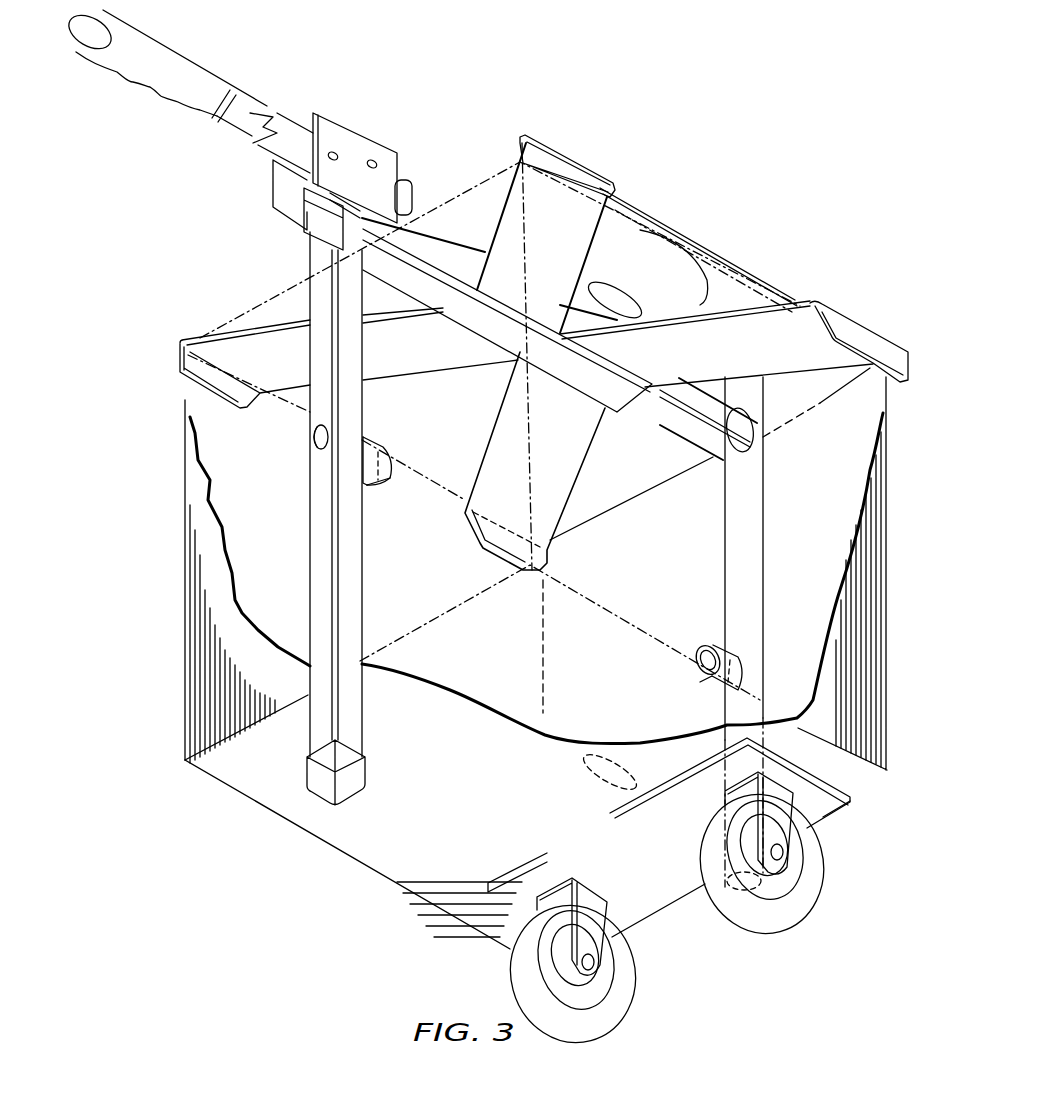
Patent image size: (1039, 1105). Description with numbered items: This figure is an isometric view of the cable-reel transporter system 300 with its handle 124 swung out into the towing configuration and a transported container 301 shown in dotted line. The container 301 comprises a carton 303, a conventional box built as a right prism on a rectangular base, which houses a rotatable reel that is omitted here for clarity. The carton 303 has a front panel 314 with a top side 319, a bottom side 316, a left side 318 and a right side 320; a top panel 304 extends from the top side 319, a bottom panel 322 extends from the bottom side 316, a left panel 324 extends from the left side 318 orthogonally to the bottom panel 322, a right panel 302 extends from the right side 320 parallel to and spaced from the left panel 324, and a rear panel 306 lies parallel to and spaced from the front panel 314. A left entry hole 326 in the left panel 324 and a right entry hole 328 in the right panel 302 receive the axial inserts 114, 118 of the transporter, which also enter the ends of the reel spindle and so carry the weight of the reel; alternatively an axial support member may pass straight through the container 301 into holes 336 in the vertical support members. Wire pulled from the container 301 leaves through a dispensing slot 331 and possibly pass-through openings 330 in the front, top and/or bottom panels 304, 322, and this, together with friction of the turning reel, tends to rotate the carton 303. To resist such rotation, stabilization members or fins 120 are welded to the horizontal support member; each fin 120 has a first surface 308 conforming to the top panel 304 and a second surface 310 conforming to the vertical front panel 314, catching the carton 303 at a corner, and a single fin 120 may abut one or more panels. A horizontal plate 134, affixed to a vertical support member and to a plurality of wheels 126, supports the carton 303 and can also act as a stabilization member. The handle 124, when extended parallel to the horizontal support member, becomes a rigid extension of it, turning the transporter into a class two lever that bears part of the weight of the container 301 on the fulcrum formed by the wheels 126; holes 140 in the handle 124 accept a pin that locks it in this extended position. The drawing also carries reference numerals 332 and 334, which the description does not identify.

The axial insert 114 is at (375, 485).
The axial insert 118 is at (705, 645).
The stabilization member 120 is at (560, 160).
The handle 124 is at (247, 105).
The wheels 126 is at (822, 888).
The horizontal plate 134 is at (673, 895).
The holes 140 is at (388, 160).
The system 300 is at (752, 142).
The container 301 is at (440, 190).
The right panel 302 is at (646, 681).
The carton 303 is at (185, 690).
The top panel 304 is at (476, 418).
The rear panel 306 is at (283, 531).
The first surface 308 is at (766, 357).
The second surface 310 is at (222, 388).
The front panel 314 is at (650, 472).
The bottom side 316 is at (815, 735).
The left side 318 is at (580, 250).
The top side 319 is at (742, 268).
The right side 320 is at (884, 718).
The bottom panel 322 is at (455, 792).
The left panel 324 is at (284, 316).
The left entry hole 326 is at (372, 437).
The right entry hole 328 is at (700, 688).
The pass-through openings 330 is at (645, 308).
The dispensing slot 331 is at (755, 393).
The plate hole 332 is at (340, 153).
The mounting plate 334 is at (332, 125).
The holes 336 is at (312, 438).